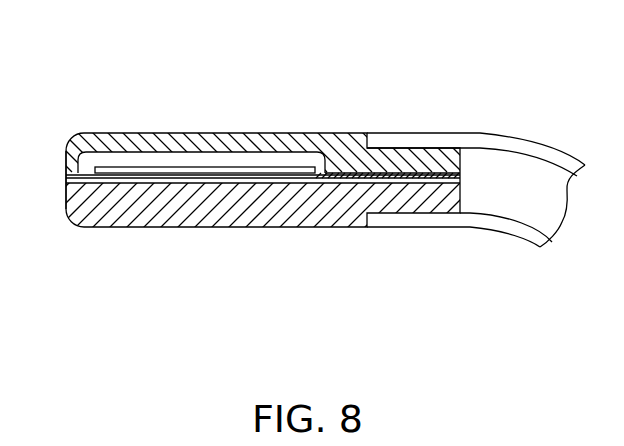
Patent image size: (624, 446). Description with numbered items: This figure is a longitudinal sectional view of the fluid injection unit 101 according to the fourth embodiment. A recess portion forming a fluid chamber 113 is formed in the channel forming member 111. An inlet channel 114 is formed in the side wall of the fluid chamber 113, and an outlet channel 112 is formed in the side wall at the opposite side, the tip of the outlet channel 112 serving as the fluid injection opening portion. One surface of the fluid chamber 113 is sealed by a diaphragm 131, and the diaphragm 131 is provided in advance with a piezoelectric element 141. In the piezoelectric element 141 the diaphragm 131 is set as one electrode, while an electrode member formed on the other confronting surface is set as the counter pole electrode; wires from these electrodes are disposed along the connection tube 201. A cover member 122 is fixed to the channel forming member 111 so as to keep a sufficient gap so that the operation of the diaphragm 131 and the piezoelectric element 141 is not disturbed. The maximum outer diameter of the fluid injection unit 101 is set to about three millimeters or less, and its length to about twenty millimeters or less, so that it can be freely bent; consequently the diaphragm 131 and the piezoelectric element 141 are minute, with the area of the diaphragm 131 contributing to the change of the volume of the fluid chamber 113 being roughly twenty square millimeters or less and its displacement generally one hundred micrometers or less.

The fluid injection unit 101 is at (279, 43).
The channel forming member 111 is at (263, 212).
The outlet channel 112 is at (76, 232).
The fluid chamber 113 is at (212, 181).
The inlet channel 114 is at (385, 179).
The cover member 122 is at (187, 134).
The diaphragm 131 is at (166, 183).
The piezoelectric element 141 is at (300, 165).
The connection tube 201 is at (487, 230).